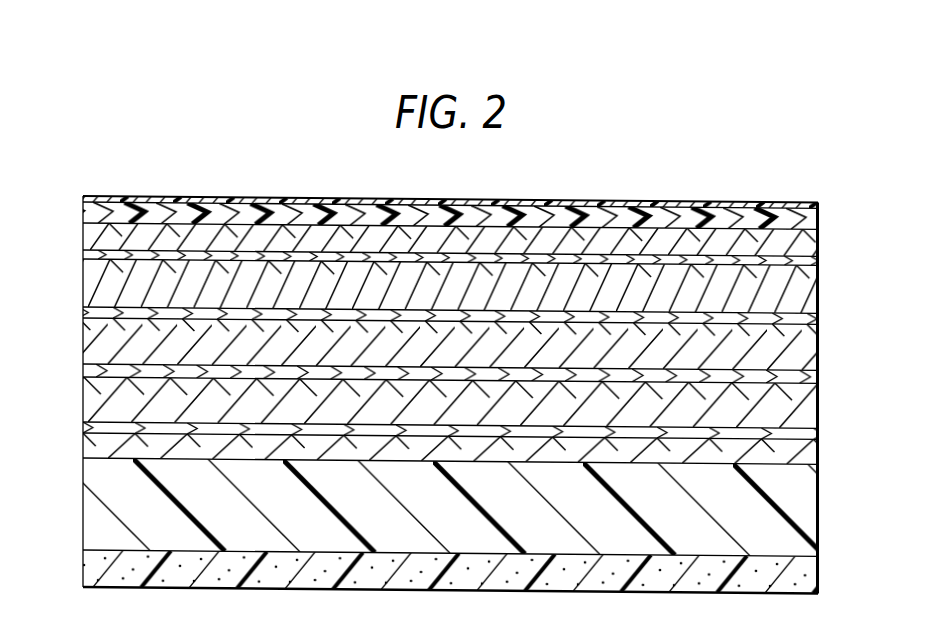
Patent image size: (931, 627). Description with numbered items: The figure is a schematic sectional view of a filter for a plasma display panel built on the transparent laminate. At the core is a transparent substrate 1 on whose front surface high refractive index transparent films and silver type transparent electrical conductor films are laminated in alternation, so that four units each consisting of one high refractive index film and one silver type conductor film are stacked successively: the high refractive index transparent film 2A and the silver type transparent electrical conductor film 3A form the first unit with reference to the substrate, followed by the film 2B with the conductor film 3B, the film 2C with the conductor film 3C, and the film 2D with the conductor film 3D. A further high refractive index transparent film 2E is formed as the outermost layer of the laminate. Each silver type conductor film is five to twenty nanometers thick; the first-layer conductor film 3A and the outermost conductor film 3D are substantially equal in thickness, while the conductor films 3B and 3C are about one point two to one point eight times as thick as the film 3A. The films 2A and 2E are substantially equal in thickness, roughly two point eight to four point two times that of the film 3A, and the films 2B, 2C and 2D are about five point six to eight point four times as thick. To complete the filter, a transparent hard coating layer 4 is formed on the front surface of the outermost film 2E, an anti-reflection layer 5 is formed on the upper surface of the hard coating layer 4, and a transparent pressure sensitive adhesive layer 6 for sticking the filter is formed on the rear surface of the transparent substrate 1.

The transparent substrate 1 is at (83, 497).
The high refractive index transparent film 2A is at (818, 448).
The high refractive index transparent film 2B is at (818, 400).
The high refractive index transparent film 2C is at (818, 344).
The high refractive index transparent film 2D is at (818, 284).
The high refractive index transparent film 2E is at (818, 243).
The silver type transparent electrical conductor film 3A is at (83, 428).
The silver type transparent electrical conductor film 3B is at (83, 372).
The silver type transparent electrical conductor film 3C is at (83, 313).
The silver type transparent electrical conductor film 3D is at (83, 255).
The transparent hard coating layer 4 is at (83, 206).
The anti-reflection layer 5 is at (818, 206).
The transparent pressure sensitive adhesive layer 6 is at (818, 571).